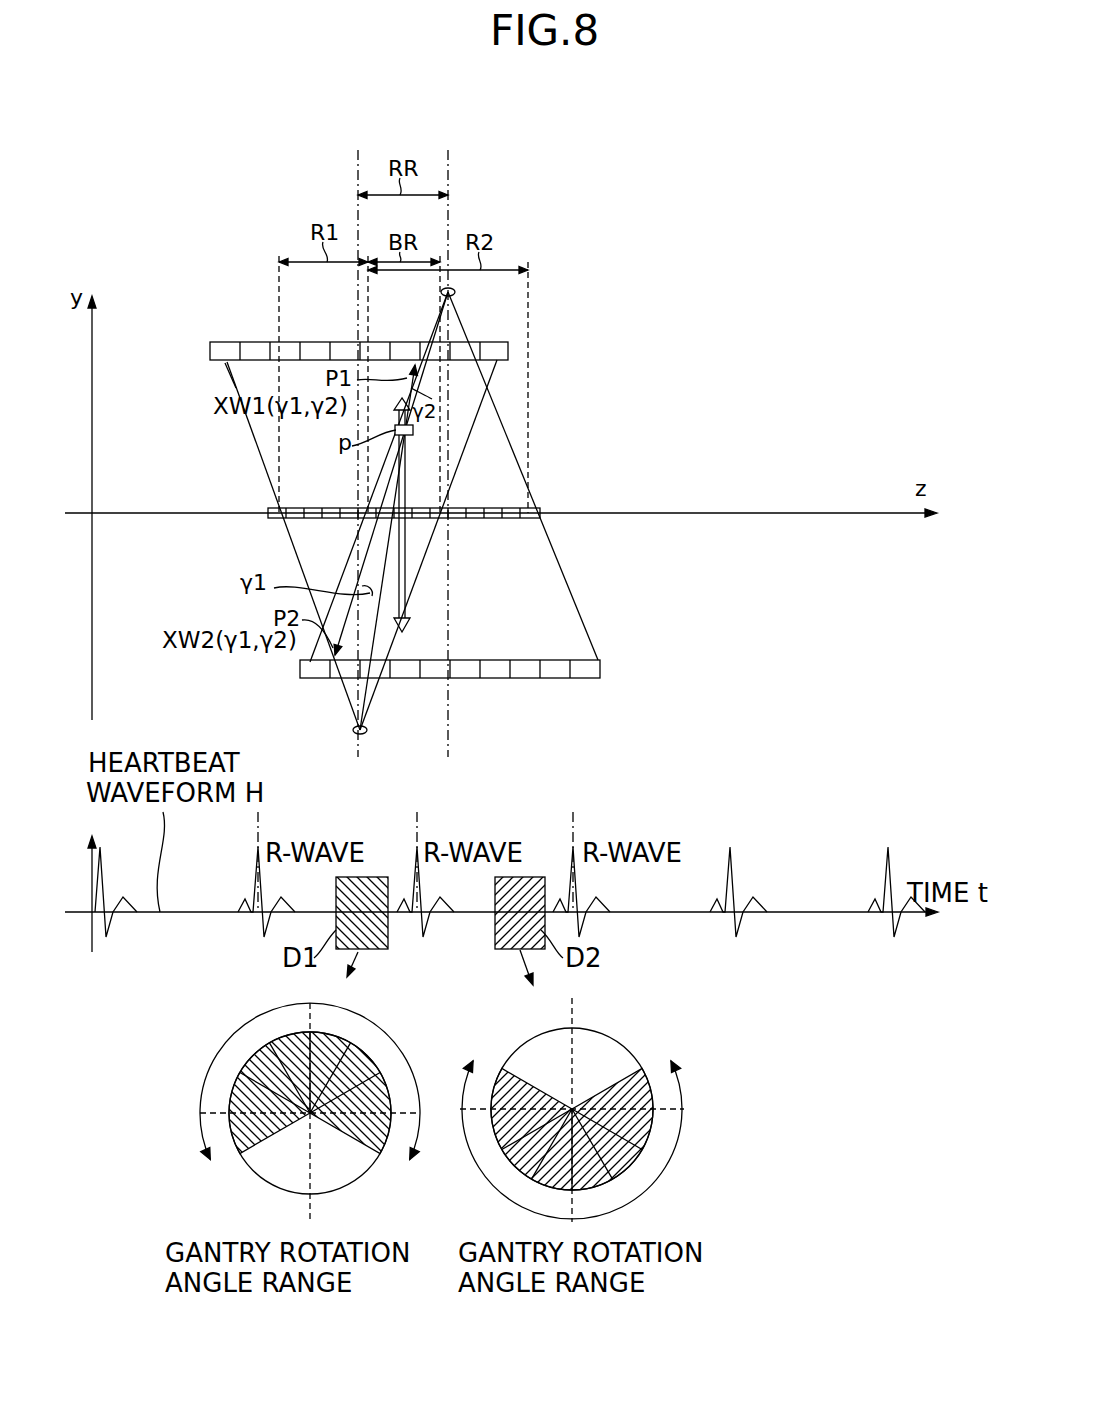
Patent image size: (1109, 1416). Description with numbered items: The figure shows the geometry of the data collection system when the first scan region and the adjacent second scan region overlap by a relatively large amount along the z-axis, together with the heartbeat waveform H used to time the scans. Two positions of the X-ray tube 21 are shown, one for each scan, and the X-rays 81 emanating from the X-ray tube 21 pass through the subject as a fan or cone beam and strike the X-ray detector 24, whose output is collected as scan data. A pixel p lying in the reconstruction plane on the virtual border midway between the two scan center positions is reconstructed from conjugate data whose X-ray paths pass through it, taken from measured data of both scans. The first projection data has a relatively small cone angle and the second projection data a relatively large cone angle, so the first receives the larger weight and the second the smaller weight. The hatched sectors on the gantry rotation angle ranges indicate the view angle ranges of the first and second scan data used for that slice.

The X-ray tube 21 is at (456, 291).
The X-ray detector 24 is at (210, 351).
The X-rays 81 is at (500, 433).